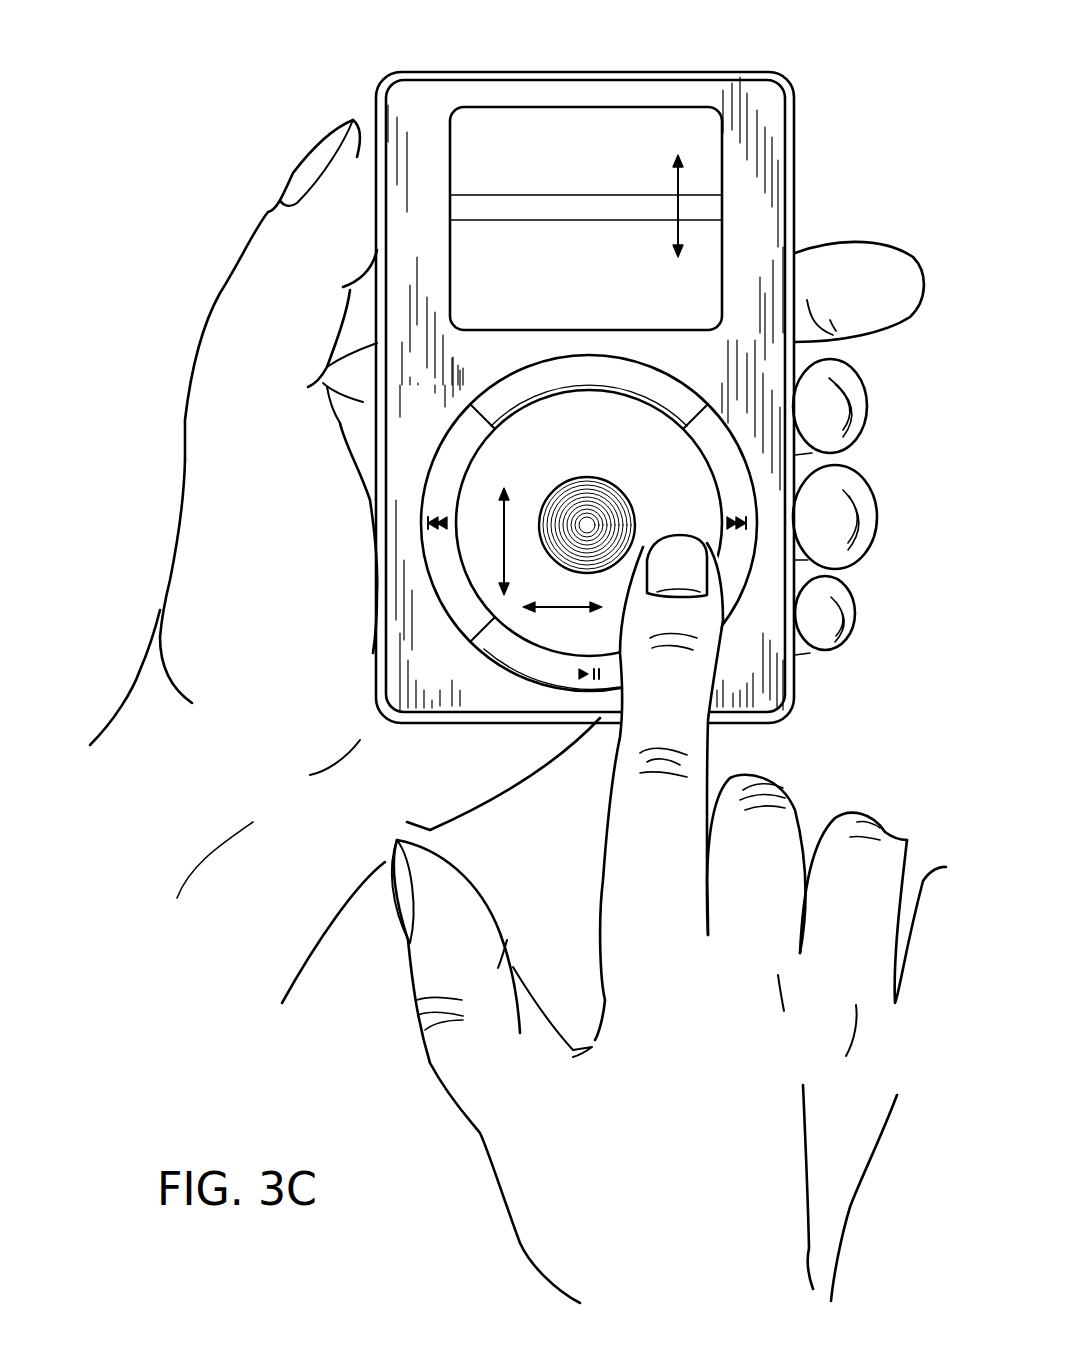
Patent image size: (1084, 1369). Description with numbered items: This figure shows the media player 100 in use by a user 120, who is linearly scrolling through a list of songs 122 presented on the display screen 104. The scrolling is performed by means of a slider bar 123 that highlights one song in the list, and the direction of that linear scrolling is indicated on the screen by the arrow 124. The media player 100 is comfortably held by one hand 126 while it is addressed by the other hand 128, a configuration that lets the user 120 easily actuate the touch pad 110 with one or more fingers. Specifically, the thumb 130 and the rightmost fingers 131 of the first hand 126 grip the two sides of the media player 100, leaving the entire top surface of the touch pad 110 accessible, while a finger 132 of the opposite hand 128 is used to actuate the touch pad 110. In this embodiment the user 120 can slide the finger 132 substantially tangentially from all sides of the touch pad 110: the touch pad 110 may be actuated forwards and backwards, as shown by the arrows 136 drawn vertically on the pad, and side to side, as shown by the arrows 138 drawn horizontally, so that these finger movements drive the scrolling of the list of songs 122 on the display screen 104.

The media player 100 is at (655, 62).
The display screen 104 is at (697, 123).
The touch pad 110 is at (563, 627).
The user 120 is at (375, 988).
The list of songs 122 is at (557, 153).
The slider bar 123 is at (705, 208).
The arrow 124 is at (680, 185).
The hand 126 is at (128, 697).
The hand 128 is at (520, 1247).
The thumb 130 is at (353, 120).
The rightmost fingers 131 is at (868, 467).
The finger 132 is at (710, 743).
The arrows 136 is at (503, 545).
The arrows 138 is at (563, 607).